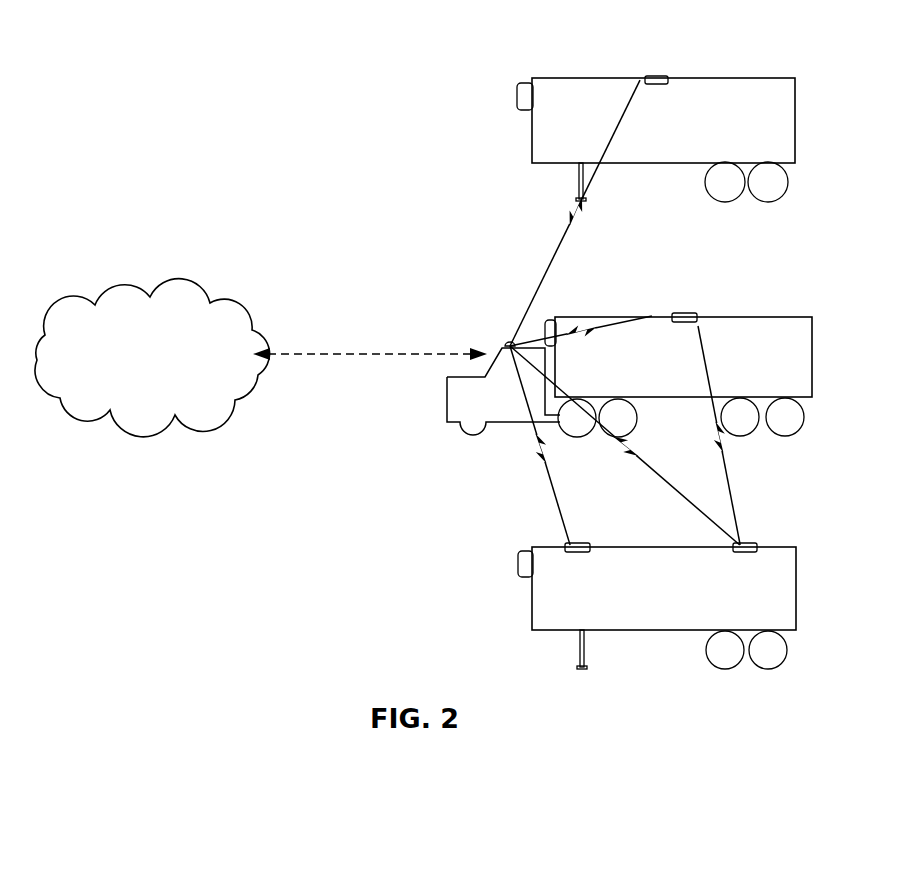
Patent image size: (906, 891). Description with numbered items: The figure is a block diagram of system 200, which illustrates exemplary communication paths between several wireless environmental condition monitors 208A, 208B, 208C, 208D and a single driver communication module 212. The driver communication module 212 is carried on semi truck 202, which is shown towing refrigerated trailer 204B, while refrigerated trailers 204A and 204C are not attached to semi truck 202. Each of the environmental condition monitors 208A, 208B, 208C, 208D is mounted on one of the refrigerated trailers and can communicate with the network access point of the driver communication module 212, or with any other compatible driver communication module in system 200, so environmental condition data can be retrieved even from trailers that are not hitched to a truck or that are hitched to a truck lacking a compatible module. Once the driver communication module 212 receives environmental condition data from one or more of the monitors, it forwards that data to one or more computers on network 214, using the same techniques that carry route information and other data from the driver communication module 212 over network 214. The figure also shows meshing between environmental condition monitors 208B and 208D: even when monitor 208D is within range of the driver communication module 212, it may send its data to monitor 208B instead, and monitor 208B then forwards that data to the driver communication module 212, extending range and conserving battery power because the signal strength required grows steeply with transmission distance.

The system 200 is at (144, 146).
The semi truck 202 is at (505, 400).
The refrigerated trailer 204A is at (706, 143).
The refrigerated trailer 204B is at (667, 368).
The refrigerated trailer 204C is at (682, 603).
The wireless environmental condition monitor 208A is at (656, 76).
The wireless environmental condition monitor 208B is at (685, 313).
The wireless environmental condition monitor 208C is at (577, 543).
The wireless environmental condition monitor 208D is at (748, 543).
The driver communication module 212 is at (510, 343).
The network 214 is at (166, 380).